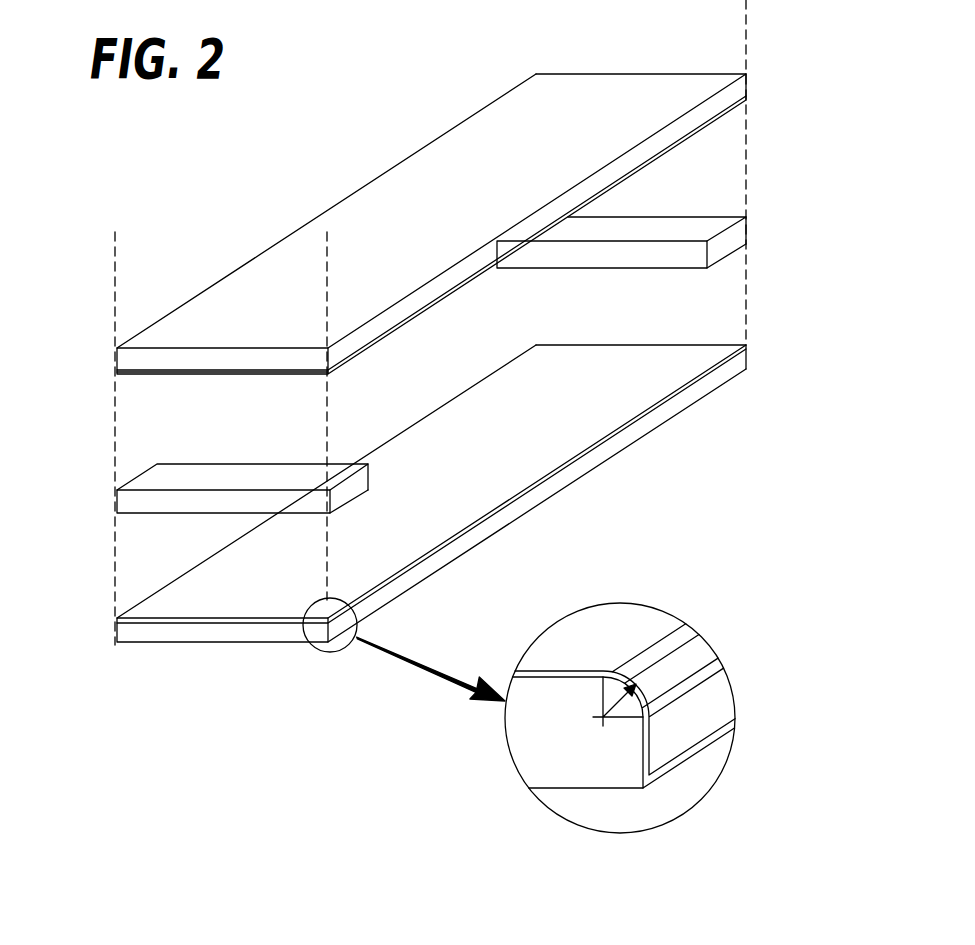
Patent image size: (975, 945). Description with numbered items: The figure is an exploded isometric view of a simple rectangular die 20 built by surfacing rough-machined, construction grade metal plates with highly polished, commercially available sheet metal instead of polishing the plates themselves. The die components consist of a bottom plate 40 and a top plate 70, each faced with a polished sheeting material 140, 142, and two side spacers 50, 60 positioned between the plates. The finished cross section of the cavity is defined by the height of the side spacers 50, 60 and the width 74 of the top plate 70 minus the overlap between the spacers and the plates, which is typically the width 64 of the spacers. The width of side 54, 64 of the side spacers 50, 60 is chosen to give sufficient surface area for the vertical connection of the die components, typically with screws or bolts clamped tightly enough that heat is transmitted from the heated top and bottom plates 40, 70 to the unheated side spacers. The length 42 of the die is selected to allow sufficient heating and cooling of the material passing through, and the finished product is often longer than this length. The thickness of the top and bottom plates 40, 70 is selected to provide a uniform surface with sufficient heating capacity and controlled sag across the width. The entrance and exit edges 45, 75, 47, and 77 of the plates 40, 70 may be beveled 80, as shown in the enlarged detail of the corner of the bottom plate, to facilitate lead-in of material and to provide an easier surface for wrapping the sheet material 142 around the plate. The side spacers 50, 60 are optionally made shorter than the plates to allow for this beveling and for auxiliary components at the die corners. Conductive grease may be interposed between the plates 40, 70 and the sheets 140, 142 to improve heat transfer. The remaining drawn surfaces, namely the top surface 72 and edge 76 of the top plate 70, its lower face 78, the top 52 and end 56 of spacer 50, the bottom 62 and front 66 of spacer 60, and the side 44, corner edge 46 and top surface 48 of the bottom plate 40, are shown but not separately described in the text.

The die 20 is at (577, 50).
The top plate 70 is at (683, 52).
The upper surface 72 is at (618, 74).
The width of the top plate 74 is at (428, 145).
The entrance edge of the top plate 75 is at (279, 244).
The corner edge 76 is at (752, 80).
The exit edge of the top plate 77 is at (443, 287).
The lower surface layer 78 is at (157, 372).
The polished sheeting material 140 is at (116, 371).
The side spacer 50 is at (707, 228).
The top surface of spacer 52 is at (646, 214).
The width of side of the side spacer 54 is at (730, 254).
The end face of spacer 56 is at (750, 228).
The side spacer 60 is at (160, 480).
The bottom of spacer 62 is at (160, 515).
The width of the spacers 64 is at (352, 489).
The front face of spacer 66 is at (117, 503).
The bottom plate 40 is at (760, 340).
The length of the die 42 is at (205, 643).
The side edge 44 is at (410, 592).
The entrance edge of the bottom plate 45 is at (160, 590).
The corner edge 46 is at (752, 358).
The exit edge of the bottom plate 47 is at (590, 462).
The top surface 48 is at (655, 411).
The polished sheeting material 142 is at (117, 620).
The bevel 80 is at (703, 662).